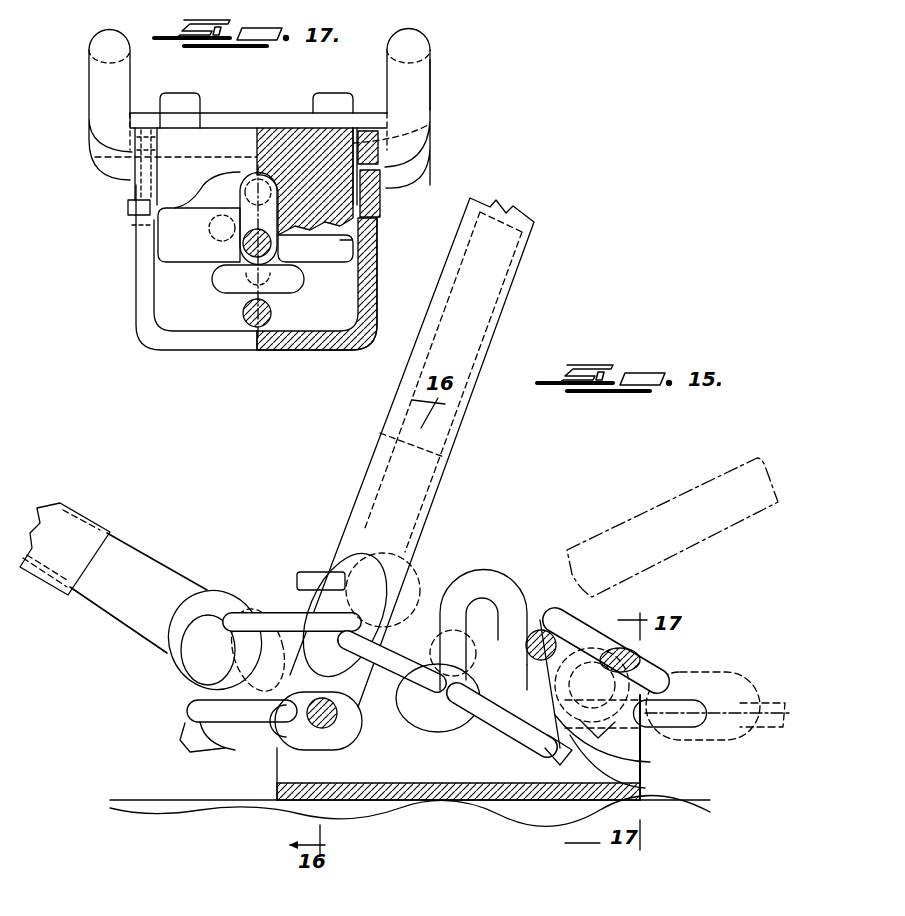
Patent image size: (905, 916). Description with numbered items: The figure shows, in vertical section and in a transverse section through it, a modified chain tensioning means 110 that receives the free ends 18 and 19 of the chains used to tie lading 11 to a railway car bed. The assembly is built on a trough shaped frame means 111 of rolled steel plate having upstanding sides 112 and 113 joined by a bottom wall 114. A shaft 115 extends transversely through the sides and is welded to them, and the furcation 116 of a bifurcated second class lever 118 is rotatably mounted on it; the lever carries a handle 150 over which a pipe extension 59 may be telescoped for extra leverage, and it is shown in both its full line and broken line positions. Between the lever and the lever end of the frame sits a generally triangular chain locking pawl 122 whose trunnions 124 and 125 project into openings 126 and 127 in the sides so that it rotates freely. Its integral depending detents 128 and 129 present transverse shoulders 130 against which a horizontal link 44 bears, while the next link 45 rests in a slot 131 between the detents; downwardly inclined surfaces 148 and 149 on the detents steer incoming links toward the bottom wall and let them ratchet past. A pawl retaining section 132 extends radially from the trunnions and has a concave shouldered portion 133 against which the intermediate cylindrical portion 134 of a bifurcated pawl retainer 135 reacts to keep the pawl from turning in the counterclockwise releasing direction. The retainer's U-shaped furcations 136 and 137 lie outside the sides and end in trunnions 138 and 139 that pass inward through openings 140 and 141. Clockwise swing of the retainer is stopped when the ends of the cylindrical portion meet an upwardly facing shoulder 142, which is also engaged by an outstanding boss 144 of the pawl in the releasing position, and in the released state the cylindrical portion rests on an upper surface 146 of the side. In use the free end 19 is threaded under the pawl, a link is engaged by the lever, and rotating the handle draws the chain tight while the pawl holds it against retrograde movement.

In FIG. 15, the lading 11 is at (245, 806).
In FIG. 15, the free end of chain 18 is at (205, 752).
In FIG. 17, the free end of chain 19 is at (230, 298).
In FIG. 15, the free end of chain 19 is at (760, 680).
In FIG. 17, the link 44 is at (208, 222).
In FIG. 15, the link 44 is at (500, 720).
In FIG. 17, the next link 45 is at (240, 195).
In FIG. 15, the next link 45 is at (626, 734).
In FIG. 15, the pipe extension 59 is at (86, 506).
In FIG. 15, the chain tensioning means 110 is at (250, 533).
In FIG. 17, the trough shaped frame means 111 is at (128, 325).
In FIG. 15, the trough shaped frame means 111 is at (272, 786).
In FIG. 17, the upstanding side 112 is at (378, 253).
In FIG. 15, the upstanding side 112 is at (404, 750).
In FIG. 17, the upstanding side 113 is at (140, 296).
In FIG. 17, the bottom wall 114 is at (238, 345).
In FIG. 15, the bottom wall 114 is at (400, 802).
In FIG. 15, the shaft 115 is at (330, 728).
In FIG. 15, the furcation 116 is at (300, 725).
In FIG. 15, the lever 118 is at (166, 560).
In FIG. 17, the chain locking pawl 122 is at (250, 106).
In FIG. 15, the chain locking pawl 122 is at (658, 646).
In FIG. 17, the trunnion 124 is at (382, 170).
In FIG. 15, the trunnion 124 is at (672, 660).
In FIG. 17, the trunnion 125 is at (127, 208).
In FIG. 17, the opening 126 is at (382, 210).
In FIG. 17, the opening 127 is at (132, 234).
In FIG. 17, the depending detent 128 is at (345, 250).
In FIG. 15, the depending detent 128 is at (645, 788).
In FIG. 17, the depending detent 129 is at (170, 250).
In FIG. 15, the shoulders 130 is at (560, 752).
In FIG. 17, the slot 131 is at (292, 210).
In FIG. 17, the pawl retaining section 132 is at (270, 128).
In FIG. 15, the pawl retaining section 132 is at (600, 624).
In FIG. 15, the concave shouldered portion 133 is at (575, 633).
In FIG. 17, the intermediate cylindrical portion 134 is at (216, 112).
In FIG. 15, the intermediate cylindrical portion 134 is at (487, 624).
In FIG. 17, the pawl retainer 135 is at (437, 44).
In FIG. 15, the pawl retainer 135 is at (478, 563).
In FIG. 17, the U-shaped furcation 136 is at (432, 84).
In FIG. 15, the U-shaped furcation 136 is at (455, 576).
In FIG. 17, the U-shaped furcation 137 is at (86, 84).
In FIG. 17, the trunnion 138 is at (356, 128).
In FIG. 15, the trunnion 138 is at (442, 704).
In FIG. 17, the trunnion 139 is at (155, 112).
In FIG. 17, the opening 140 is at (430, 124).
In FIG. 15, the opening 140 is at (450, 732).
In FIG. 17, the opening 141 is at (95, 158).
In FIG. 15, the shoulder 142 is at (541, 630).
In FIG. 15, the outstanding boss 144 is at (680, 680).
In FIG. 15, the upper surface 146 is at (360, 686).
In FIG. 17, the downwardly inclined surface 148 is at (322, 256).
In FIG. 15, the downwardly inclined surface 148 is at (650, 762).
In FIG. 17, the downwardly inclined surface 149 is at (212, 252).
In FIG. 15, the handle 150 is at (112, 548).